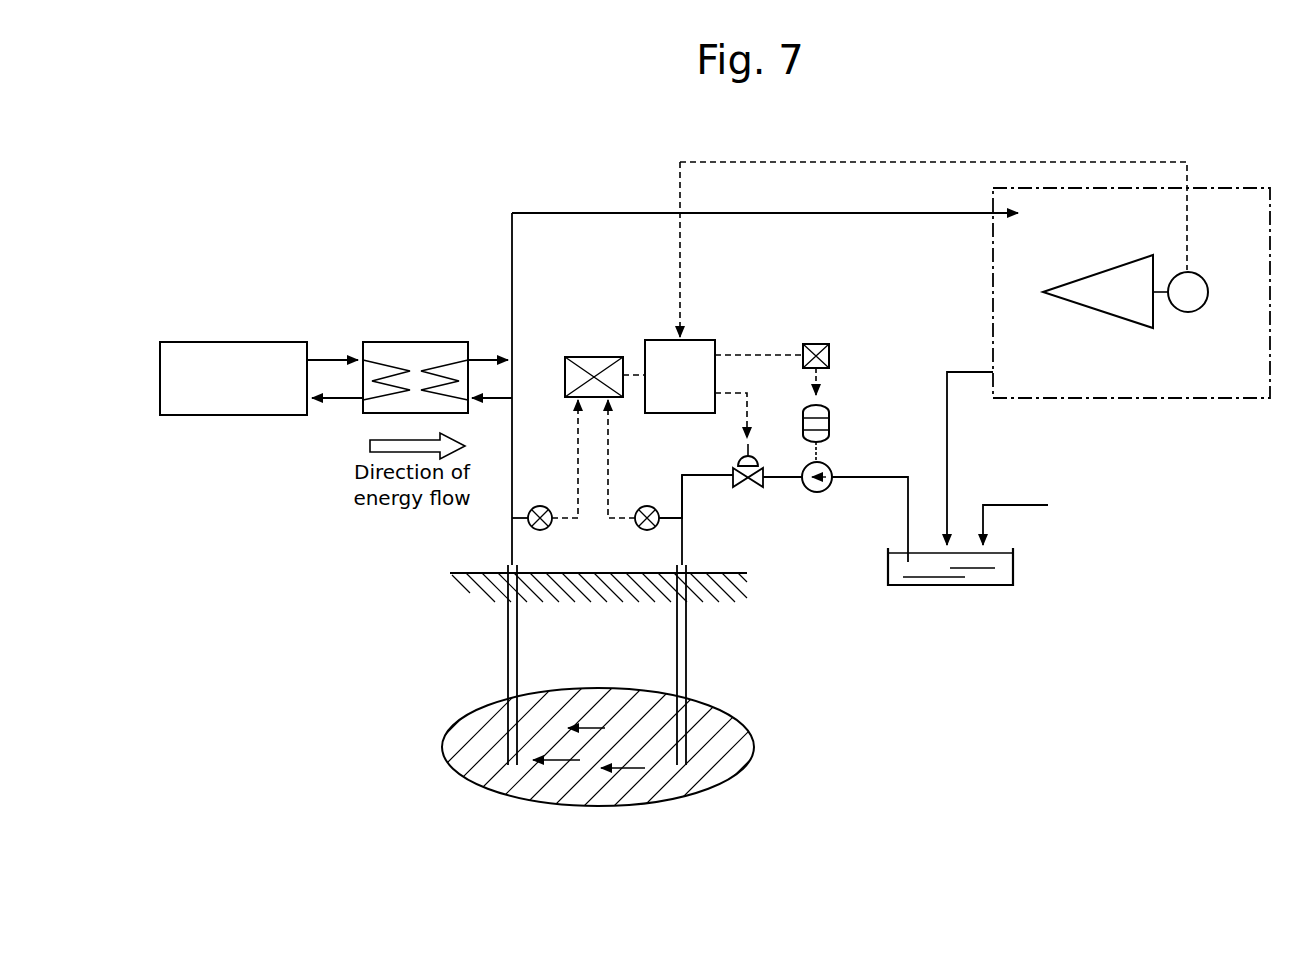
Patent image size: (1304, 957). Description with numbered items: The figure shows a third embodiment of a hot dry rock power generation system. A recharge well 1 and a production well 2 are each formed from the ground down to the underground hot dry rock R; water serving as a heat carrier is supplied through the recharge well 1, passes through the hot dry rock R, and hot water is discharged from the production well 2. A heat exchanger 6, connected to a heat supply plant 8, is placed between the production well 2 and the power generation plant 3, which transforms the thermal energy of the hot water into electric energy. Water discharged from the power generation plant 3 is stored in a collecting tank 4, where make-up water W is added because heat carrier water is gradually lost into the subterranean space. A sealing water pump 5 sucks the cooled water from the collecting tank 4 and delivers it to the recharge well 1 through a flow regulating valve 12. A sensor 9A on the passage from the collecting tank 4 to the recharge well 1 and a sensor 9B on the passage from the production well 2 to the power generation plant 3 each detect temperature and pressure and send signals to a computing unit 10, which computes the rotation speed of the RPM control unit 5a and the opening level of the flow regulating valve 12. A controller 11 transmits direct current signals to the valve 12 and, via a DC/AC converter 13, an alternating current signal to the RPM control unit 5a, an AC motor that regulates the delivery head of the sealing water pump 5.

The recharge well 1 is at (688, 643).
The production well 2 is at (519, 643).
The power generation plant 3 is at (1157, 399).
The collecting tank 4 is at (1014, 568).
The sealing water pump 5 is at (816, 493).
The RPM control unit 5a is at (831, 424).
The heat exchanger 6 is at (416, 342).
The heat supply plant 8 is at (228, 342).
The sensor 9A is at (648, 506).
The sensor 9B is at (541, 506).
The computing unit 10 is at (597, 356).
The controller 11 is at (705, 339).
The flow regulating valve 12 is at (750, 489).
The DC/AC converter 13 is at (830, 356).
The hot dry rock R is at (628, 807).
The make-up water W is at (1031, 520).